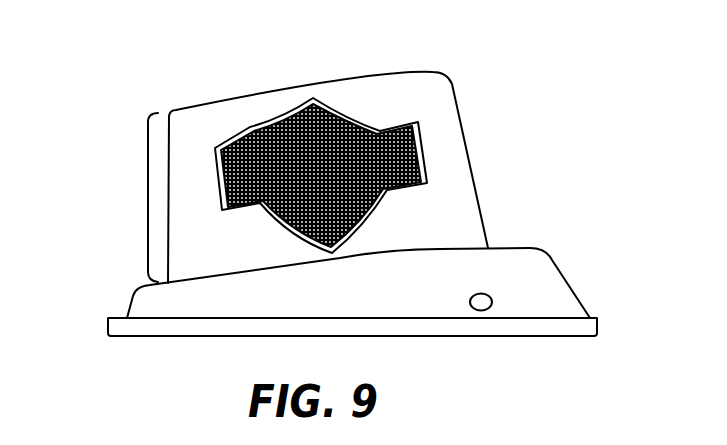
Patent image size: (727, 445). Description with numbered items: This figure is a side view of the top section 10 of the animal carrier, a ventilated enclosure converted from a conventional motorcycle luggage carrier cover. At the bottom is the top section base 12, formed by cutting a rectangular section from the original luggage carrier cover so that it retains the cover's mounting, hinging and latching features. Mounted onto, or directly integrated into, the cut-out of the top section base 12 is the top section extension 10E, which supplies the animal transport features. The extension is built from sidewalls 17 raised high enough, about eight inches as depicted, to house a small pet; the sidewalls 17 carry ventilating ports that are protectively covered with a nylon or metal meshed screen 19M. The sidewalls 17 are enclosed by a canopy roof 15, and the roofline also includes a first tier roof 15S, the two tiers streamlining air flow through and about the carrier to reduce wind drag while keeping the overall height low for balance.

The top section 10 is at (431, 66).
The canopy roof 15 is at (362, 72).
The sidewalls 17 is at (192, 125).
The top section extension 10E is at (148, 191).
The meshed screen 19M is at (293, 117).
The first tier roof 15S is at (510, 247).
The top section base 12 is at (562, 298).